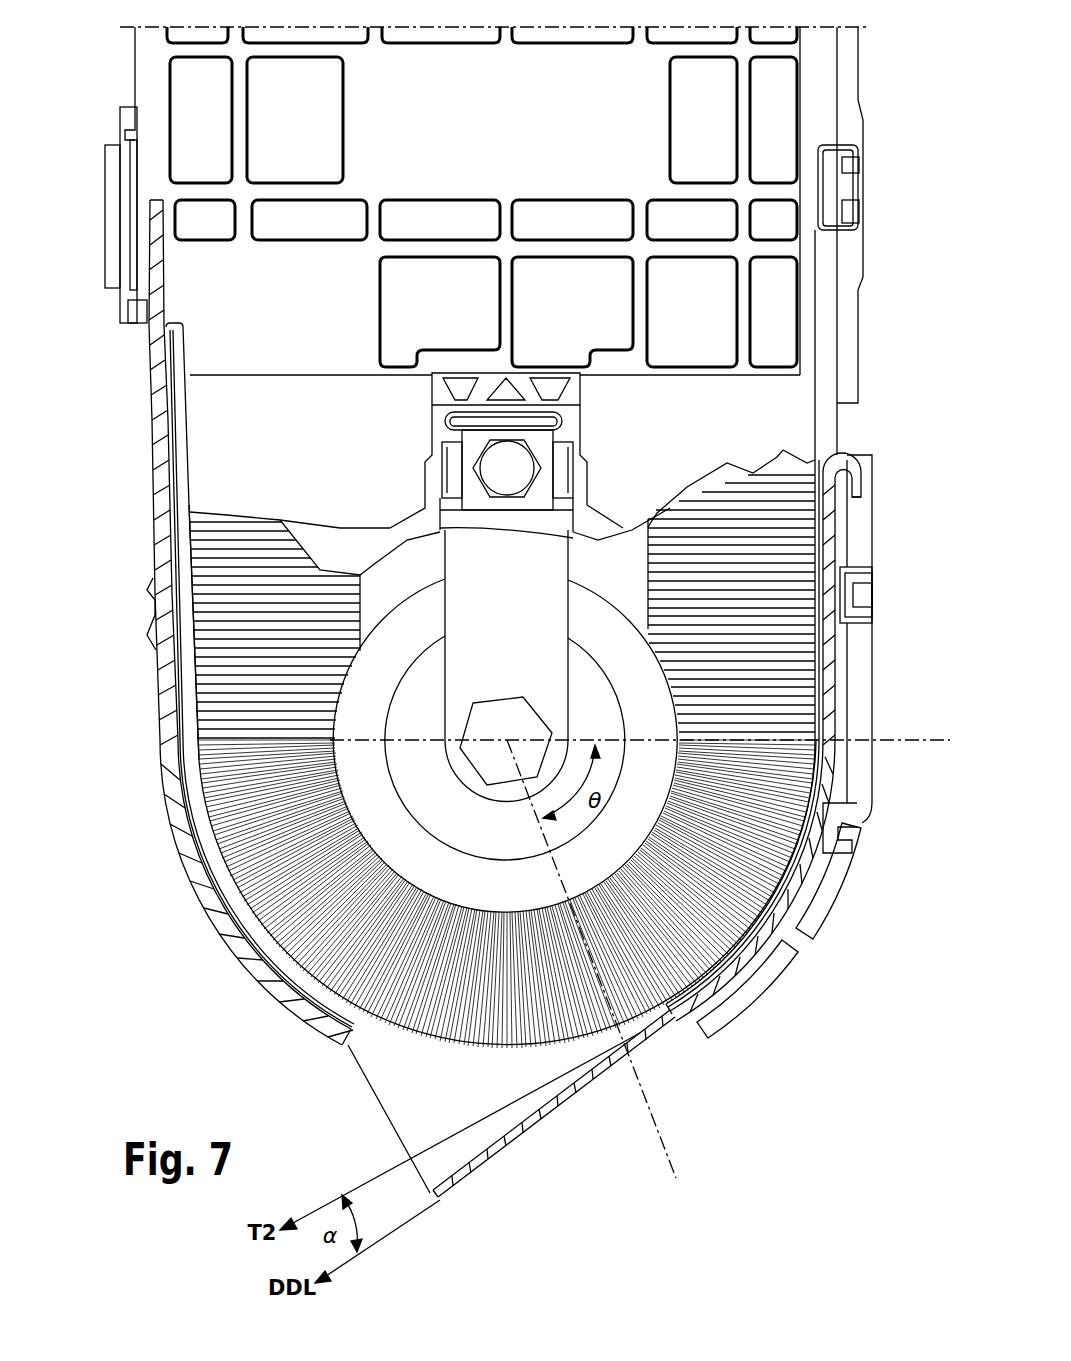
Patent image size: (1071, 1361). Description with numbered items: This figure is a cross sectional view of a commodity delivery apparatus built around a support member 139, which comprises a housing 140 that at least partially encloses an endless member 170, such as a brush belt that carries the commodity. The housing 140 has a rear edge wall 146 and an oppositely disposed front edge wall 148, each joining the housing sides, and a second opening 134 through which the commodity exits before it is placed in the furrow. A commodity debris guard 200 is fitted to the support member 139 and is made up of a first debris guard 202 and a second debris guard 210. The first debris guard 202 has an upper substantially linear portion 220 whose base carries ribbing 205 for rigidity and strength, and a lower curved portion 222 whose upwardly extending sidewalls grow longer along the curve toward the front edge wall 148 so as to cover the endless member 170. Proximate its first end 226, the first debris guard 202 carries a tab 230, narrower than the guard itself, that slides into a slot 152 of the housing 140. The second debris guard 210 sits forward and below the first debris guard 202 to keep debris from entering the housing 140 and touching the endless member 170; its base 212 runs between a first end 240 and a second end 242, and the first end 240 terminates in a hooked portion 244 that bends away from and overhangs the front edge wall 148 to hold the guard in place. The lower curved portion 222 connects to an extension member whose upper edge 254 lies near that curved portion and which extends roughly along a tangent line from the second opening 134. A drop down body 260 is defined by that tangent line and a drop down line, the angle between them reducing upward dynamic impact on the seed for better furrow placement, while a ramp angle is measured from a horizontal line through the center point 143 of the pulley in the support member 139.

The support member 139 is at (110, 79).
The housing 140 is at (478, 135).
The center point 143 is at (490, 733).
The rear edge wall 146 is at (205, 845).
The front edge wall 148 is at (865, 680).
The slot 152 is at (185, 322).
The endless member 170 is at (790, 468).
The commodity debris guard 200 is at (178, 988).
The first debris guard 202 is at (158, 726).
The ribbing 205 is at (150, 640).
The second debris guard 210 is at (684, 1010).
The base 212 is at (834, 773).
The upper substantially linear portion 220 is at (156, 455).
The lower curved portion 222 is at (290, 1005).
The first end 226 is at (148, 325).
The tab 230 is at (165, 258).
The first end 240 is at (862, 456).
The hooked portion 244 is at (862, 482).
The second end 242 is at (440, 1195).
The upper edge 254 is at (348, 1045).
The drop down body 260 is at (545, 1132).
The second opening 134 is at (640, 1030).